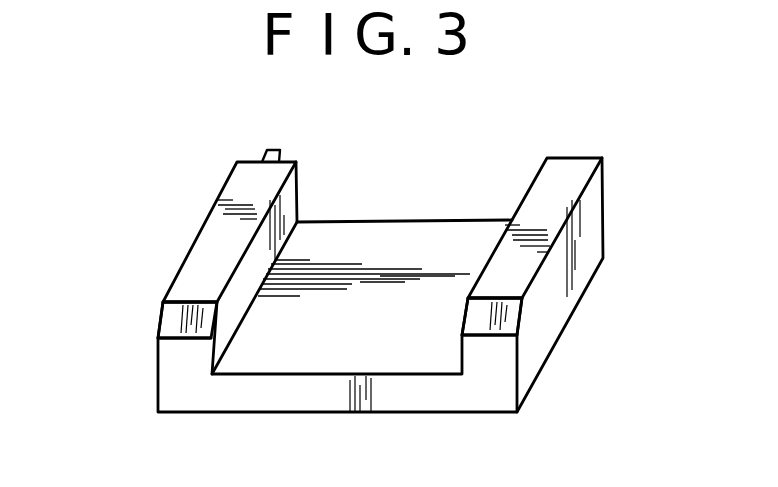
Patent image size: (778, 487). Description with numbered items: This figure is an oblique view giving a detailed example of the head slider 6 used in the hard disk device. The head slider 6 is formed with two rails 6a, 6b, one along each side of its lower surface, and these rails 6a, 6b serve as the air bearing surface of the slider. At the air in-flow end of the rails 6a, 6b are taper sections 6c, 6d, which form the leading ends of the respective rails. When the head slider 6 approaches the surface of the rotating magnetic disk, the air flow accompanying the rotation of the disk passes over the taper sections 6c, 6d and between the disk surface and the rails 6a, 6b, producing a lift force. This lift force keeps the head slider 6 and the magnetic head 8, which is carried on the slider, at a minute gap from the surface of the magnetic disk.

The head slider 6 is at (374, 257).
The rail 6a is at (207, 256).
The rail 6b is at (538, 253).
The taper section 6c is at (168, 328).
The taper section 6d is at (510, 322).
The magnetic head 8 is at (246, 132).